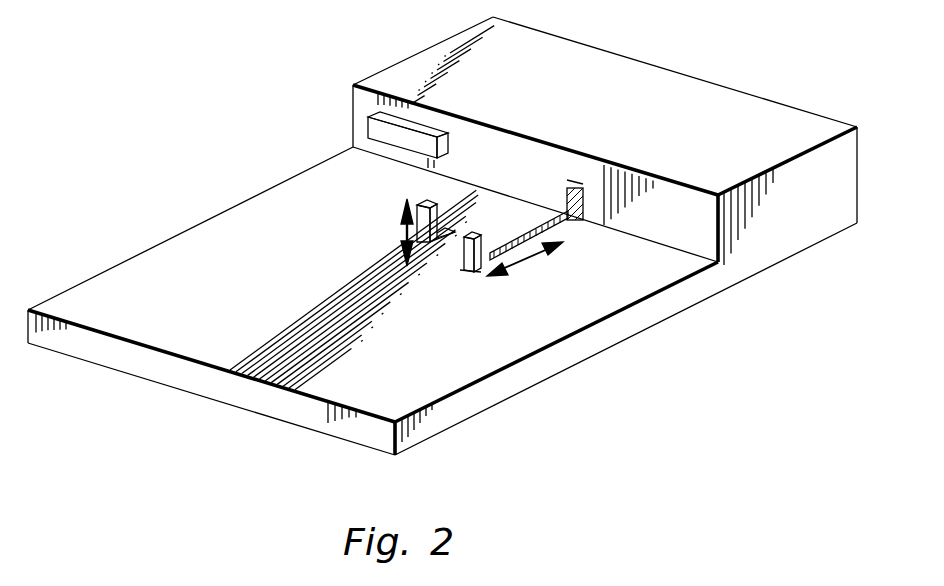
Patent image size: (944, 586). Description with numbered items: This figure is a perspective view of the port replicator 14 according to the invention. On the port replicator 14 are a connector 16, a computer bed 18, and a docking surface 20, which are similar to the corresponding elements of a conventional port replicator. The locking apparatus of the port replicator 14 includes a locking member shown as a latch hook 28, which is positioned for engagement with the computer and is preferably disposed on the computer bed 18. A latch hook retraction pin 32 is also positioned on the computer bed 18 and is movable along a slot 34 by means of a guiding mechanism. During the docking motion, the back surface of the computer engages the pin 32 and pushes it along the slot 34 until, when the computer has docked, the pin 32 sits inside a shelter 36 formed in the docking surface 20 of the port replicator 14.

The port replicator 14 is at (760, 97).
The connector 16 is at (407, 125).
The computer bed 18 is at (400, 202).
The docking surface 20 is at (570, 180).
The latch hook 28 is at (433, 243).
The latch hook retraction pin 32 is at (480, 262).
The slot 34 is at (572, 222).
The shelter 36 is at (578, 222).